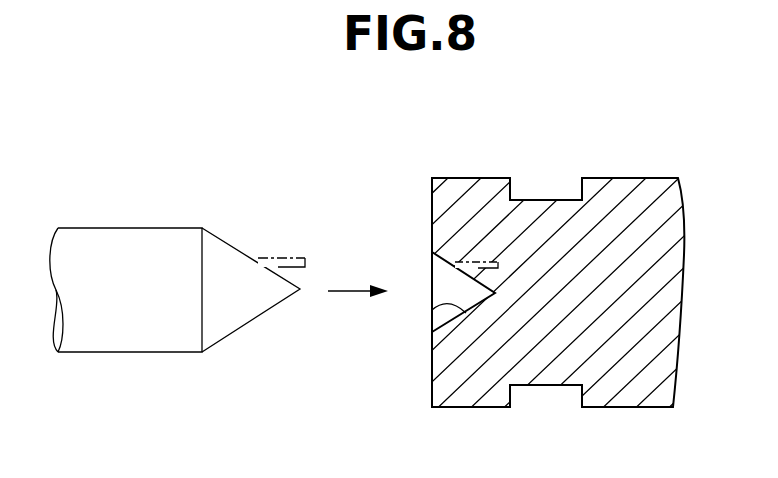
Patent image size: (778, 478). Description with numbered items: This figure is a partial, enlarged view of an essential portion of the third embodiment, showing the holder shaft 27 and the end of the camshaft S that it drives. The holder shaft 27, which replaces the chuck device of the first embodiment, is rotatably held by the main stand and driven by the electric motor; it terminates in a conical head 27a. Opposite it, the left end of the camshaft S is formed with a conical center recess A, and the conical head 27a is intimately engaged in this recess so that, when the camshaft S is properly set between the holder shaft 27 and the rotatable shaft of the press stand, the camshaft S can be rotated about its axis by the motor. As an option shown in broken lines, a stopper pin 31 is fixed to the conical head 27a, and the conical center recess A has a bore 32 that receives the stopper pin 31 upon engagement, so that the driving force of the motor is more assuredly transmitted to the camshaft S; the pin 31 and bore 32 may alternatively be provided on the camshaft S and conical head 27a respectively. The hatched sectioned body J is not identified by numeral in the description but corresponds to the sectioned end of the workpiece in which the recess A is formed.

The holder shaft 27 is at (105, 245).
The conical head 27a is at (240, 312).
The stopper pin 31 is at (282, 257).
The bore 32 is at (477, 262).
The workpiece J is at (637, 178).
The camshaft S is at (694, 243).
The conical center recess A is at (432, 310).